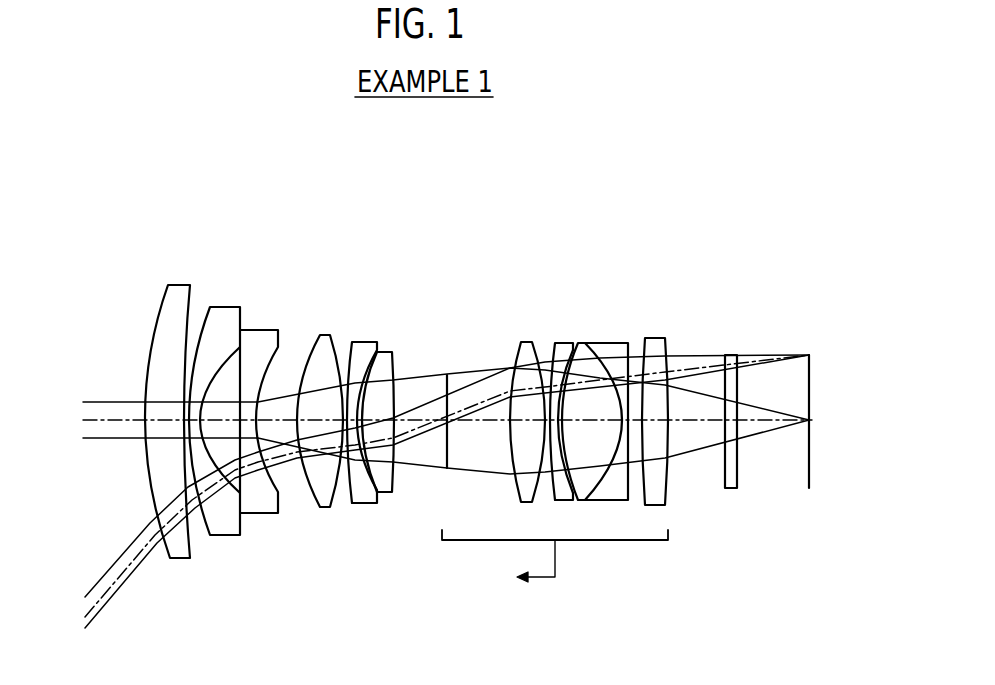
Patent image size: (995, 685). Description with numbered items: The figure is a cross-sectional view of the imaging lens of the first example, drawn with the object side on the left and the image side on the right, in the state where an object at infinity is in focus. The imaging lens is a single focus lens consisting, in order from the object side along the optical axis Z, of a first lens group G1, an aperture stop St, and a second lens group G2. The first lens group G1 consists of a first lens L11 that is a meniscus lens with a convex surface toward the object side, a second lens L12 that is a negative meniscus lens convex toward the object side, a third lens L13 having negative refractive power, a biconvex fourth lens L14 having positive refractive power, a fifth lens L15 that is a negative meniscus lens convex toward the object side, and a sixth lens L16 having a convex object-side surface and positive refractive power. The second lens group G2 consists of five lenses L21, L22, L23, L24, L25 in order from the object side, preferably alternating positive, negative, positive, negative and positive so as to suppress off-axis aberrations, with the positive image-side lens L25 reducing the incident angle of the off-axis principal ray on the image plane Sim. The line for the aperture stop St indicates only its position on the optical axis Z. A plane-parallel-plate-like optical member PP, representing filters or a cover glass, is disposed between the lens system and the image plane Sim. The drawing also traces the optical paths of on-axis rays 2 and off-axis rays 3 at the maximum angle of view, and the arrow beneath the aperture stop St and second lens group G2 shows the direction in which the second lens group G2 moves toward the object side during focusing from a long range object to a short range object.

The first lens group G1 is at (387, 156).
The second lens group G2 is at (676, 156).
The first lens L11 is at (180, 290).
The second lens L12 is at (227, 313).
The third lens L13 is at (258, 335).
The fourth lens L14 is at (325, 340).
The fifth lens L15 is at (365, 345).
The sixth lens L16 is at (383, 355).
The lens L21 is at (526, 345).
The lens L22 is at (565, 345).
The lens L23 is at (582, 345).
The lens L24 is at (612, 345).
The lens L25 is at (657, 338).
The aperture stop St is at (446, 383).
The optical member PP is at (730, 353).
The image plane Sim is at (811, 462).
The optical axis Z is at (102, 402).
The on-axis rays 2 is at (80, 397).
The off-axis rays 3 is at (80, 593).